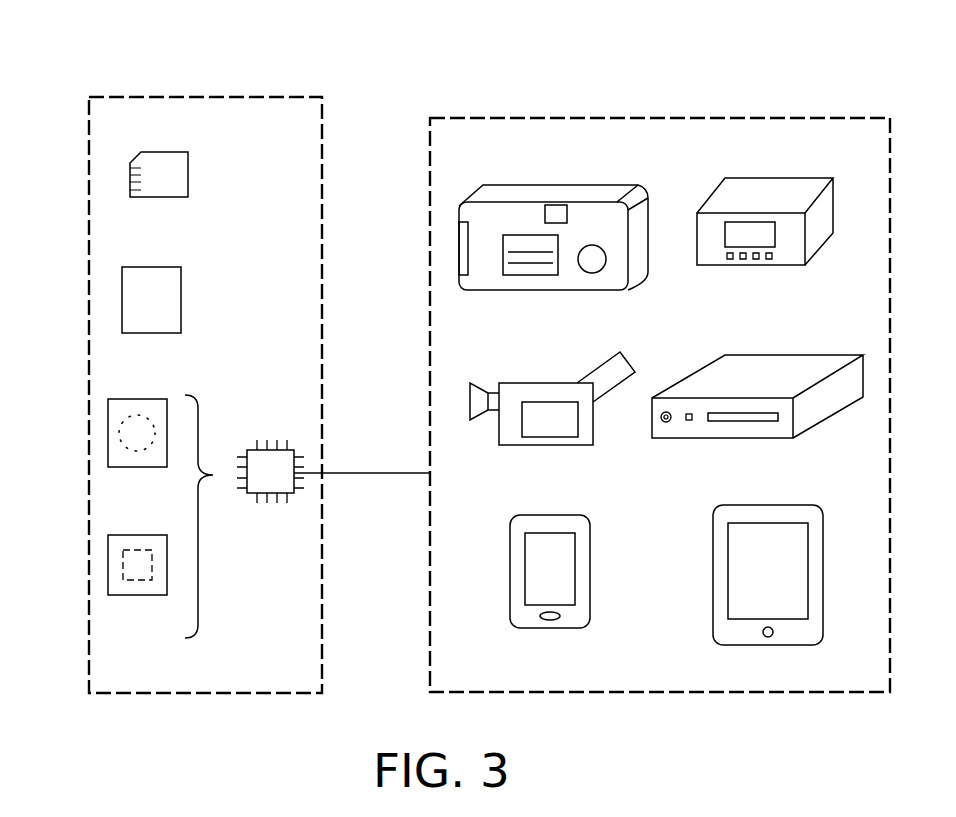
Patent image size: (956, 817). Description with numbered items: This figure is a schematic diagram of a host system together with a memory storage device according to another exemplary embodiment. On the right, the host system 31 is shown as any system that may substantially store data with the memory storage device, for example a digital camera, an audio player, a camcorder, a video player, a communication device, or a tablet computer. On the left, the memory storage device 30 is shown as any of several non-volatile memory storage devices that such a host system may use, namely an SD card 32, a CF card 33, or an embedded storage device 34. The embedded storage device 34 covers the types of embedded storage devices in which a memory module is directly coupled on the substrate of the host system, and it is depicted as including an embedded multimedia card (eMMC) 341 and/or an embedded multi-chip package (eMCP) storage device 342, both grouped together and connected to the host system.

The memory storage device 30 is at (195, 94).
The host system 31 is at (588, 117).
The SD card 32 is at (130, 181).
The CF card 33 is at (122, 300).
The embedded storage device 34 is at (272, 450).
The embedded multimedia card (eMMC) 341 is at (108, 434).
The embedded multi-chip package (eMCP) storage device 342 is at (108, 566).